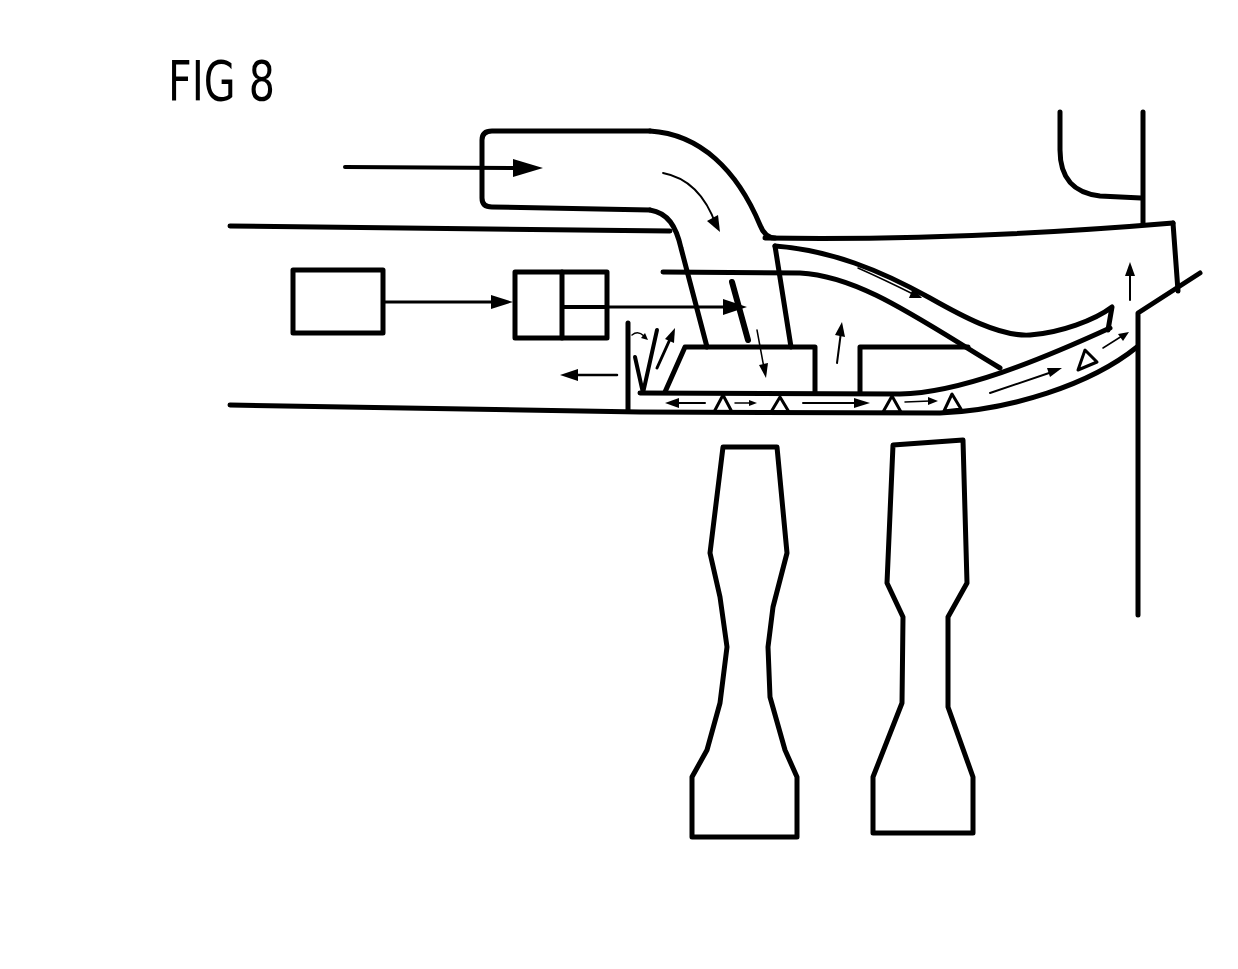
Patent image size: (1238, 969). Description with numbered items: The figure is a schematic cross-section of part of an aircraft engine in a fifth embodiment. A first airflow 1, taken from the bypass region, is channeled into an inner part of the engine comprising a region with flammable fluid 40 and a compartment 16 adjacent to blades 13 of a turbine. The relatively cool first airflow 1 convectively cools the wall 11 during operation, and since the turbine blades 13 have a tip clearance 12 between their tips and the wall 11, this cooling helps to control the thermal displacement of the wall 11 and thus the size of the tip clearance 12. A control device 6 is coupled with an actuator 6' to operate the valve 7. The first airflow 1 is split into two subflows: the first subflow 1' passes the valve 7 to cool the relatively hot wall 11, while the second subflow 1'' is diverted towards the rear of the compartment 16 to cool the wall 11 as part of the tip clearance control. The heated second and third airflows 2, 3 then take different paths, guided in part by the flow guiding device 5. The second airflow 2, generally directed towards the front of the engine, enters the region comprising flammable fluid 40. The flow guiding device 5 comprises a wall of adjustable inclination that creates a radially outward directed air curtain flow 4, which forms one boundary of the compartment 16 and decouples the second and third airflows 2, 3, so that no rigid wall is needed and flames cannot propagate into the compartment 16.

The first airflow 1 is at (568, 239).
The first subflow 1' is at (771, 341).
The second subflow 1'' is at (887, 307).
The second airflow 2 is at (593, 377).
The third airflow 3 is at (838, 360).
The air curtain flow 4 is at (670, 324).
The flow guiding device 5 is at (626, 392).
The control device 6 is at (403, 301).
The actuator 6' is at (561, 305).
The valve 7 is at (740, 288).
The wall 11 is at (1070, 380).
The tip clearance 12 is at (737, 430).
The blades 13 is at (745, 587).
The compartment 16 is at (1026, 290).
The region comprising flammable fluid 40 is at (396, 394).